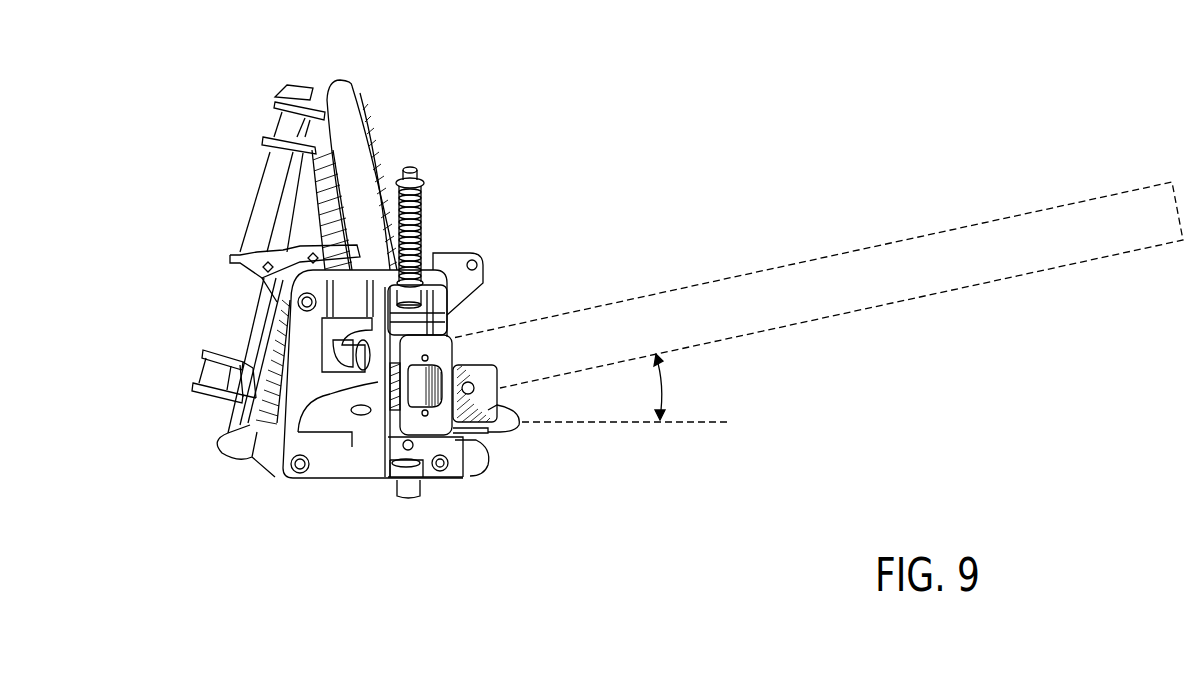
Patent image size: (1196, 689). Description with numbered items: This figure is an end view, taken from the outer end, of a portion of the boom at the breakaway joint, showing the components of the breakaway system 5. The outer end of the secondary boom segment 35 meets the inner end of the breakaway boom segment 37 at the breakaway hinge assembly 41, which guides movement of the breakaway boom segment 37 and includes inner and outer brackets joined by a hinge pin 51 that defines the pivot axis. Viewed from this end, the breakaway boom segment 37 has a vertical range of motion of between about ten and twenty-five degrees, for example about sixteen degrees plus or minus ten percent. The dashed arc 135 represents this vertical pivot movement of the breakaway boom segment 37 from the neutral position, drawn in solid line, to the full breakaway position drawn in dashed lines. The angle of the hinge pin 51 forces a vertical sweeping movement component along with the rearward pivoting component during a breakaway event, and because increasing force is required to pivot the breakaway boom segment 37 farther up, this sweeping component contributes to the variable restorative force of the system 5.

The system 5 is at (222, 133).
The secondary boom segment 35 is at (257, 285).
The breakaway boom segment 37 is at (410, 363).
The breakaway hinge assembly 41 is at (316, 362).
The hinge pin 51 is at (412, 172).
The dashed arc 135 is at (665, 405).